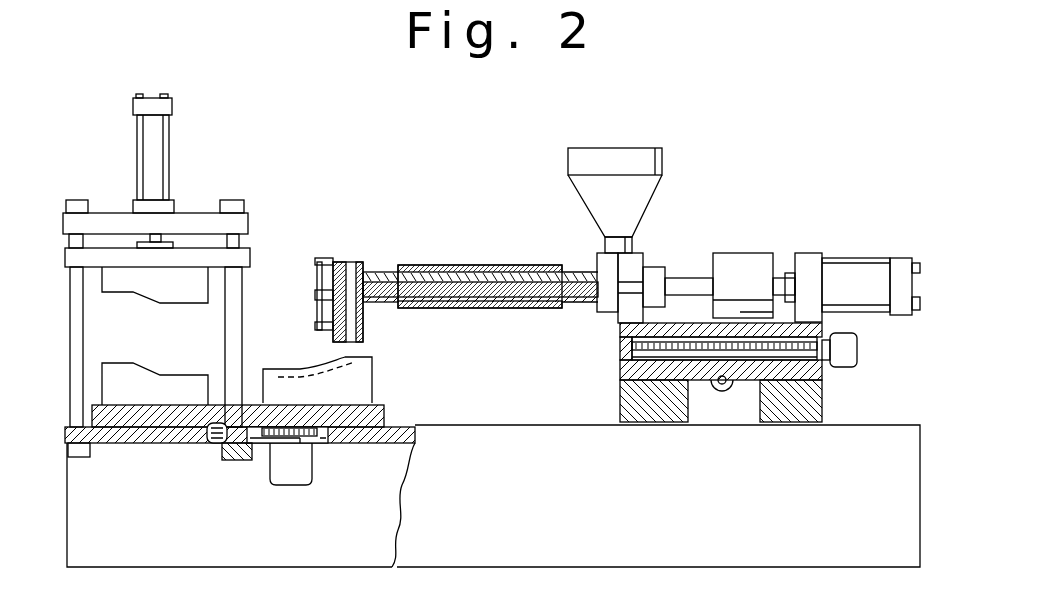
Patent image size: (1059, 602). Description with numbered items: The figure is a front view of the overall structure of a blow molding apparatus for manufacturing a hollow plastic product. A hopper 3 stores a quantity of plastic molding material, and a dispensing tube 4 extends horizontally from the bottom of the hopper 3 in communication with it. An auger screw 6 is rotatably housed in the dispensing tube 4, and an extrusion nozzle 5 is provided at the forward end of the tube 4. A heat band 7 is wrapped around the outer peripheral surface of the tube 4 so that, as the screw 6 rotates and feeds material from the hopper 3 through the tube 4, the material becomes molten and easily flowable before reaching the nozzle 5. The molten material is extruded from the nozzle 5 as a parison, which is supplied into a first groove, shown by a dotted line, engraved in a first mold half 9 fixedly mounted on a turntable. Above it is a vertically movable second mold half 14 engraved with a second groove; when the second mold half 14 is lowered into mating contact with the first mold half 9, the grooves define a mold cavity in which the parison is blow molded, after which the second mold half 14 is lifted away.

The hopper 3 is at (637, 148).
The dispensing tube 4 is at (588, 298).
The extrusion nozzle 5 is at (352, 262).
The auger screw 6 is at (385, 305).
The heat band 7 is at (502, 265).
The first mold half 9 is at (102, 372).
The second mold half 14 is at (135, 295).